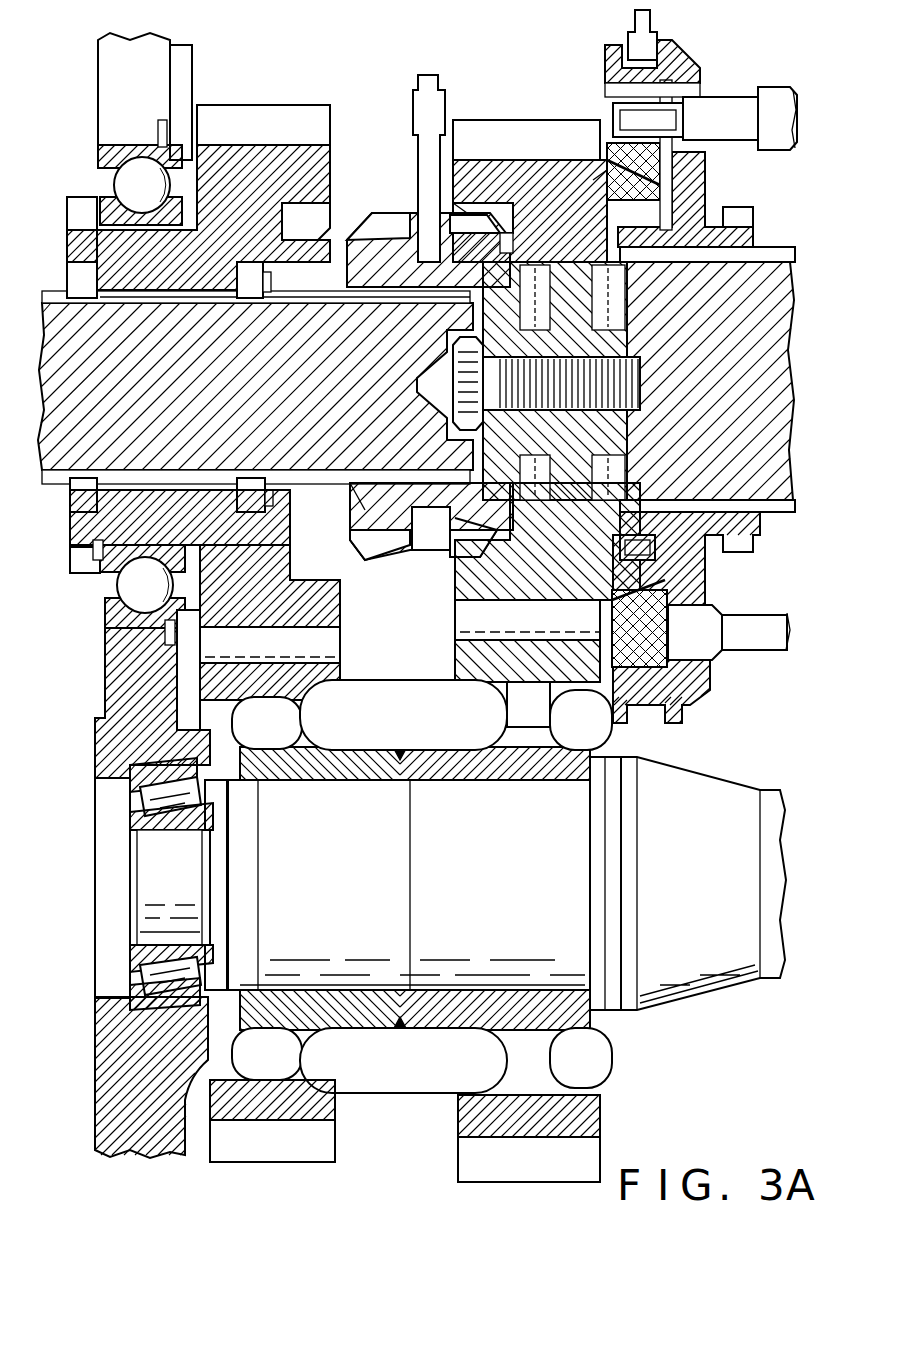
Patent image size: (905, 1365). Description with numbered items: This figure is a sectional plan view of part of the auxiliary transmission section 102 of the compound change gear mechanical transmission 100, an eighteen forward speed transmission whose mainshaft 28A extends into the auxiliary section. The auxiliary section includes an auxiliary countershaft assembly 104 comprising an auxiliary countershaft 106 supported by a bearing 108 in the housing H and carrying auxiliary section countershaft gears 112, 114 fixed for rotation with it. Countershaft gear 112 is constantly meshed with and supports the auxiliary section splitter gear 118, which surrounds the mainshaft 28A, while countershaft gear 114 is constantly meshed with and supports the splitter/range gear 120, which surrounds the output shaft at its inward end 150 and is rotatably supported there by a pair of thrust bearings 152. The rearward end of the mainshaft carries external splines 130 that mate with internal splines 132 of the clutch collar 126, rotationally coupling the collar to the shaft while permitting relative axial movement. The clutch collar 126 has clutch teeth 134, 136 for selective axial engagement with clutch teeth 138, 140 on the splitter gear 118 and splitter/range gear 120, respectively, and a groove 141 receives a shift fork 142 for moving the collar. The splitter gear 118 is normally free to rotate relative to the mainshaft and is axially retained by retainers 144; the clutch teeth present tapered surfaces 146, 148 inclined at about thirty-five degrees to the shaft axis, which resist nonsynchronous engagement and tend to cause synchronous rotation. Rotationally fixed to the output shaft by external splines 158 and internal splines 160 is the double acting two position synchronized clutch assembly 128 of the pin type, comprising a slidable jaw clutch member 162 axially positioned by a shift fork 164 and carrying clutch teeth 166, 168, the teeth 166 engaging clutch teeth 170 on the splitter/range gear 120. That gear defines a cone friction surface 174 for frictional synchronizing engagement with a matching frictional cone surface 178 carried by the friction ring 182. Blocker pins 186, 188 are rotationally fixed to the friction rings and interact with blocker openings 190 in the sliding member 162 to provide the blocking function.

The mainshaft 28A is at (255, 386).
The compound change gear mechanical transmission 100 is at (62, 80).
The auxiliary transmission section 102 is at (225, 83).
The auxiliary countershaft assembly 104 is at (727, 998).
The auxiliary countershaft 106 is at (363, 977).
The bearing 108 is at (143, 797).
The auxiliary section countershaft gear 112 is at (343, 675).
The auxiliary section countershaft gear 114 is at (460, 665).
The auxiliary section splitter gear 118 is at (205, 595).
The auxiliary section splitter/range gear 120 is at (480, 580).
The clutch collar 126 is at (385, 180).
The synchronized clutch assembly 128 is at (760, 28).
The external splines 130 is at (300, 289).
The internal splines 132 is at (427, 303).
The clutch teeth 134 is at (383, 535).
The clutch teeth 136 is at (453, 537).
The clutch teeth 138 is at (318, 190).
The clutch teeth 140 is at (453, 207).
The groove 141 is at (427, 510).
The shift fork 142 is at (428, 108).
The retainers 144 is at (75, 275).
The tapered surface 146 is at (345, 525).
The tapered surface 148 is at (355, 560).
The inward end of output shaft 150 is at (510, 283).
The thrust bearings 152 is at (607, 308).
The external splines 158 is at (775, 512).
The internal splines 160 is at (700, 510).
The slidable jaw clutch member 162 is at (690, 187).
The shift fork 164 is at (622, 35).
The clutch teeth 166 is at (641, 215).
The clutch teeth 168 is at (737, 212).
The clutch teeth 170 is at (625, 548).
The cone friction surface 174 is at (600, 172).
The frictional cone surface 178 is at (633, 171).
The friction ring 182 is at (612, 668).
The blocker pin 186 is at (775, 108).
The blocker pin 188 is at (700, 620).
The blocker openings 190 is at (700, 88).
The housing H is at (108, 1032).